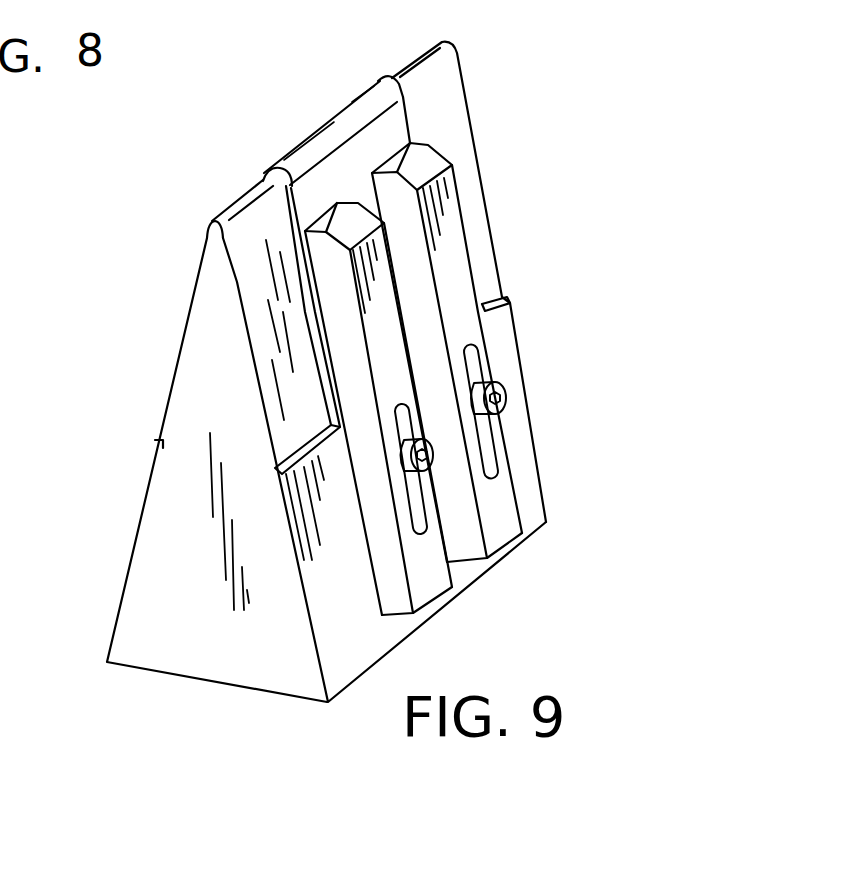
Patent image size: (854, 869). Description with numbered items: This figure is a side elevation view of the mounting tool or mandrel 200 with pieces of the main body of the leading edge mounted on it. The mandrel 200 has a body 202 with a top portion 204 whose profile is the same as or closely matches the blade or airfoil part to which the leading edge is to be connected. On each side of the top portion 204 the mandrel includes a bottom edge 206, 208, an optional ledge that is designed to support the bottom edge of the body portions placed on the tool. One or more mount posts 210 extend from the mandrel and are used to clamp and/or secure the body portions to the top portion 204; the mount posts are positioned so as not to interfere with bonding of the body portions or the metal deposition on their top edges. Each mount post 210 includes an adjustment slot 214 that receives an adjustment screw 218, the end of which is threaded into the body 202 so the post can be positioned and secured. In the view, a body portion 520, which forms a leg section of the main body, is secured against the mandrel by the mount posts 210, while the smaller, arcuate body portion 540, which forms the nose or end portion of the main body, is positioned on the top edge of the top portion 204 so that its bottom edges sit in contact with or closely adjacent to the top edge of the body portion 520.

The mounting tool or mandrel 200 is at (339, 357).
The body 202 is at (284, 441).
The top portion 204 is at (194, 372).
The bottom edge 206 is at (276, 472).
The bottom edge 208 is at (160, 445).
The mount post 210 is at (386, 314).
The adjustment slot 214 is at (425, 511).
The adjustment screw 218 is at (423, 437).
The body portion 520 is at (395, 128).
The body portion 540 is at (357, 91).